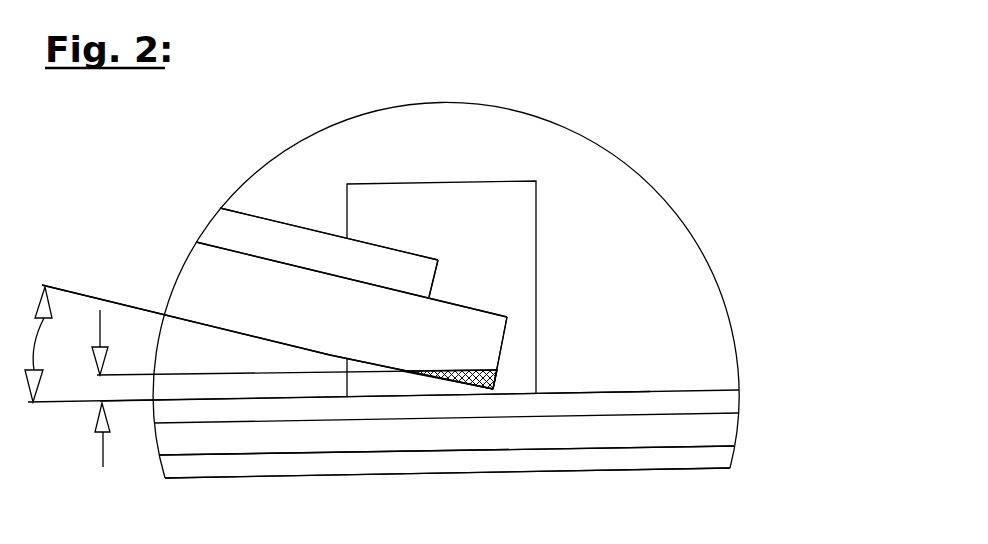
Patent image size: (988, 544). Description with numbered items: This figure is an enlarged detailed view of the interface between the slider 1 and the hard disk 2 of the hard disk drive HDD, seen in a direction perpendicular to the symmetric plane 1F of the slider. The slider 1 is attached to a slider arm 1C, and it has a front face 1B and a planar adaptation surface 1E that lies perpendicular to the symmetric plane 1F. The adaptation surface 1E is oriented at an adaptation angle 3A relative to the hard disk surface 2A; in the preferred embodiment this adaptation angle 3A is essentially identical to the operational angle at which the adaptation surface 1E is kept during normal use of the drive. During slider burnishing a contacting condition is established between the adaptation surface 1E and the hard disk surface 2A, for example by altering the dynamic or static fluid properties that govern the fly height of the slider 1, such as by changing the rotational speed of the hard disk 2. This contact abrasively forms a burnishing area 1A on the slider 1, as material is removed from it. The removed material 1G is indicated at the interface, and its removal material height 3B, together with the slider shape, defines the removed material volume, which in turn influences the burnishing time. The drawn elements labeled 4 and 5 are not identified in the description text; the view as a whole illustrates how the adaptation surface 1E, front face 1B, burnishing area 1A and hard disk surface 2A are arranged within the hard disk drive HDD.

The slider 1 is at (200, 288).
The burnishing area 1A is at (450, 360).
The front face 1B is at (498, 360).
The slider arm 1C is at (222, 228).
The adaptation surface 1E is at (263, 337).
The symmetric plane 1F is at (441, 198).
The removed material 1G is at (450, 360).
The hard disk 2 is at (713, 398).
The hard disk surface 2A is at (639, 391).
The adaptation angle 3A is at (29, 344).
The removal material height 3B is at (284, 388).
The contact region 4 is at (543, 368).
The enlarged view circle 5 is at (622, 114).
The hard disk drive HDD is at (713, 453).